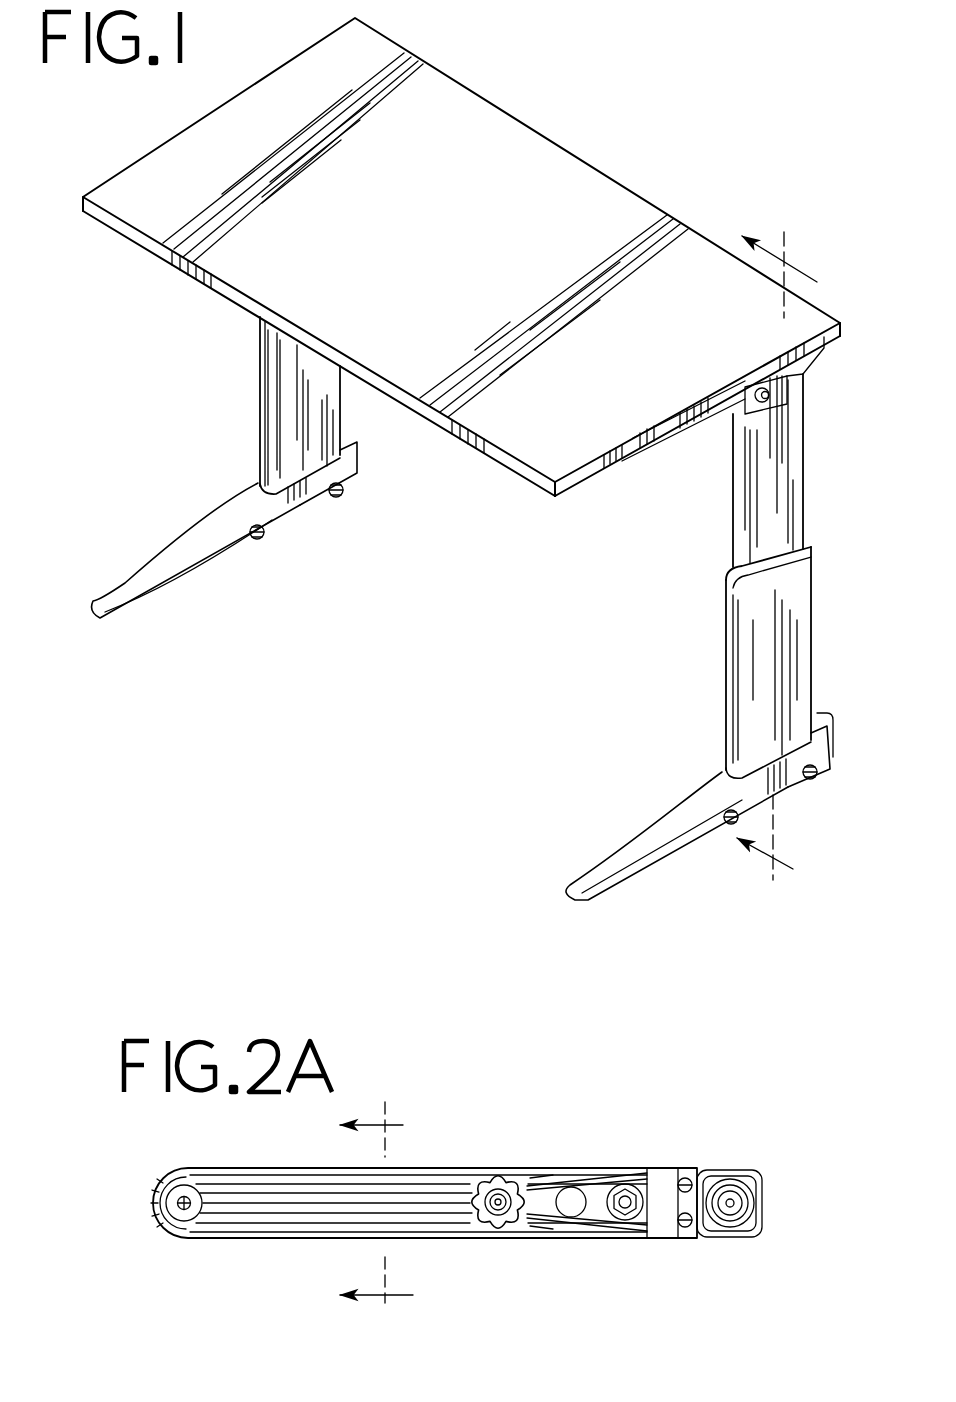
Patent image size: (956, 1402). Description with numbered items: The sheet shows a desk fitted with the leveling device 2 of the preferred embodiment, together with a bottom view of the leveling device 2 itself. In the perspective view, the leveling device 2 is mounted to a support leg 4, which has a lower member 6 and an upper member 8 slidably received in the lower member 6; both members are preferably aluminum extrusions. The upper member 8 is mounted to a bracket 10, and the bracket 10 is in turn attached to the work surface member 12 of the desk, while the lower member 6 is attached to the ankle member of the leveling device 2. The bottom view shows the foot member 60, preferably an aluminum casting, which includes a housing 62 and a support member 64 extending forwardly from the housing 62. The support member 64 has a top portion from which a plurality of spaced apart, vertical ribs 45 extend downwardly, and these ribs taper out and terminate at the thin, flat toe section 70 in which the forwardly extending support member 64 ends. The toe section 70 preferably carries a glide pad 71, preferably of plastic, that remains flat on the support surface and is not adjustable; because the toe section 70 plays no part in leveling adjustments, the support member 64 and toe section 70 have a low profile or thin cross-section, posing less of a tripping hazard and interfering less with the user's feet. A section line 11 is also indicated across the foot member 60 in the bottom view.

In FIG. 1, the leveling device 2 is at (777, 568).
In FIG. 1, the support leg 4 is at (816, 518).
In FIG. 1, the lower member 6 is at (740, 658).
In FIG. 1, the upper member 8 is at (735, 512).
In FIG. 1, the bracket 10 is at (670, 450).
In FIG. 1, the work surface member 12 is at (697, 263).
In FIG. 2A, the section line 11- 11 is at (380, 1210).
In FIG. 2A, the vertical ribs 45 is at (455, 1202).
In FIG. 1, the foot member 60 is at (628, 822).
In FIG. 2A, the foot member 60 is at (298, 1240).
In FIG. 2A, the housing 62 is at (626, 1242).
In FIG. 2A, the support member 64 is at (308, 1186).
In FIG. 2A, the toe section 70 is at (143, 1213).
In FIG. 2A, the glide pad 71 is at (183, 1216).